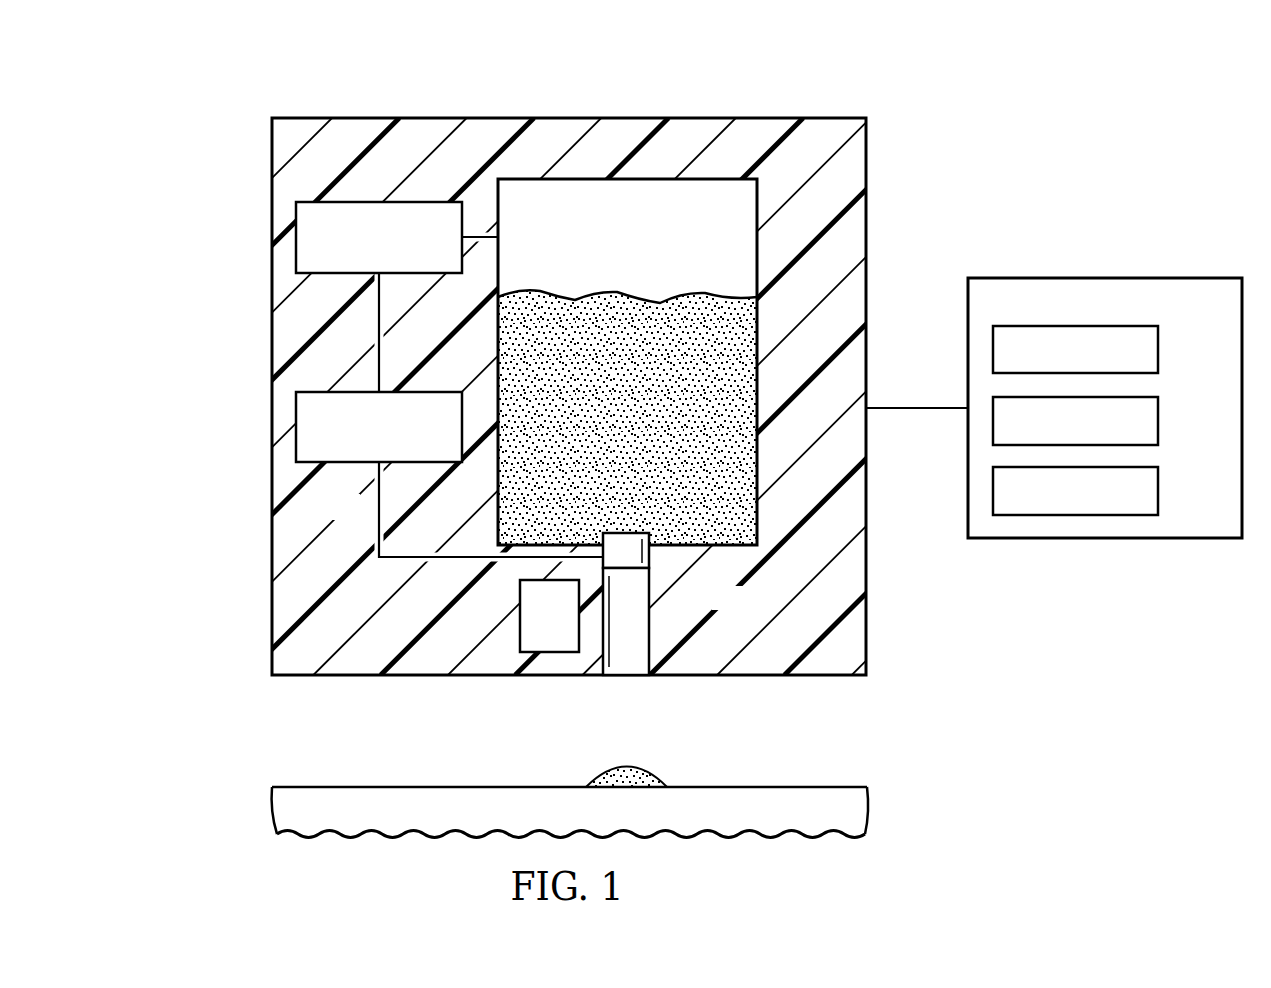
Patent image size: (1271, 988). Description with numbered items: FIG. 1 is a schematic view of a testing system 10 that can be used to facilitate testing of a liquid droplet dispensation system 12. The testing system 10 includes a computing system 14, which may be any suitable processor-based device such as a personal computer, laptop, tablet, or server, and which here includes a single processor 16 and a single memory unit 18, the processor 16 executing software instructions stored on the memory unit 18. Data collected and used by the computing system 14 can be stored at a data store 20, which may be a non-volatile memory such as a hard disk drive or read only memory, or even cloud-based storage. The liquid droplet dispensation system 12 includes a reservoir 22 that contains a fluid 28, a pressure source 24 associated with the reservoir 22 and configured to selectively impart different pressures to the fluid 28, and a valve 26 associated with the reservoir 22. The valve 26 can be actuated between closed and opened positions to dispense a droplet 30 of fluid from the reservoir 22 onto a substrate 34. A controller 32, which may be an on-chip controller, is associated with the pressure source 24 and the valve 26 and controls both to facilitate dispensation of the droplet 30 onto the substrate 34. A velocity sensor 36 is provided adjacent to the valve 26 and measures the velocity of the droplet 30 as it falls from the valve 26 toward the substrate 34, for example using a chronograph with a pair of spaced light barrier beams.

The testing system 10 is at (1003, 96).
The liquid droplet dispensation system 12 is at (271, 355).
The computing system 14 is at (1106, 279).
The processor 16 is at (1160, 351).
The memory unit 18 is at (1160, 421).
The data store 20 is at (1160, 491).
The reservoir 22 is at (585, 193).
The pressure source 24 is at (343, 202).
The valve 26 is at (650, 556).
The fluid 28 is at (657, 308).
The droplet 30 is at (628, 766).
The controller 32 is at (357, 463).
The substrate 34 is at (268, 807).
The velocity sensor 36 is at (564, 633).